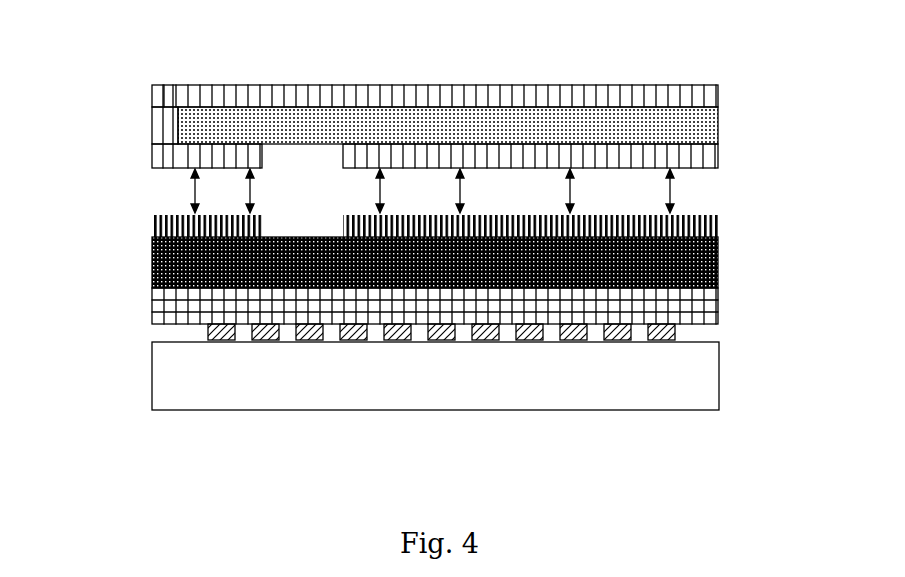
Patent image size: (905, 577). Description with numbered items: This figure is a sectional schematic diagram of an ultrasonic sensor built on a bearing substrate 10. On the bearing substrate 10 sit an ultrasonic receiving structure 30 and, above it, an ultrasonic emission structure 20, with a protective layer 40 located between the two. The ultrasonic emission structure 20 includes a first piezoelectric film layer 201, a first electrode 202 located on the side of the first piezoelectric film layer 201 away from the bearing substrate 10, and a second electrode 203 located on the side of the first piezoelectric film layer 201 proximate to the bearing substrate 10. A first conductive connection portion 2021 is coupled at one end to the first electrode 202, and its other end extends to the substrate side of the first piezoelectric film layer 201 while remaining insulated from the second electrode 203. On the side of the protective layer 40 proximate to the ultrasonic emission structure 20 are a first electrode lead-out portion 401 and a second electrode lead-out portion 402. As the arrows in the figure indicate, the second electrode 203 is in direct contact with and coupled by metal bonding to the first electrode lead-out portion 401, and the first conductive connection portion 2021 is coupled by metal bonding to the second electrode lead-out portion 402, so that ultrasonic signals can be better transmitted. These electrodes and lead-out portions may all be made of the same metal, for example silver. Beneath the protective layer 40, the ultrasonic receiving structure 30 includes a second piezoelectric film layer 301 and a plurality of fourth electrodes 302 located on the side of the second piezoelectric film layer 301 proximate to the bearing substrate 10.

The bearing substrate 10 is at (365, 382).
The ultrasonic emission structure 20 is at (433, 90).
The first piezoelectric film layer 201 is at (588, 133).
The first electrode 202 is at (670, 98).
The first conductive connection portion 2021 is at (177, 145).
The second electrode 203 is at (708, 158).
The ultrasonic receiving structure 30 is at (412, 383).
The second piezoelectric film layer 301 is at (152, 304).
The fourth electrodes 302 is at (655, 342).
The protective layer 40 is at (436, 232).
The first electrode lead-out portion 401 is at (720, 226).
The second electrode lead-out portion 402 is at (195, 218).